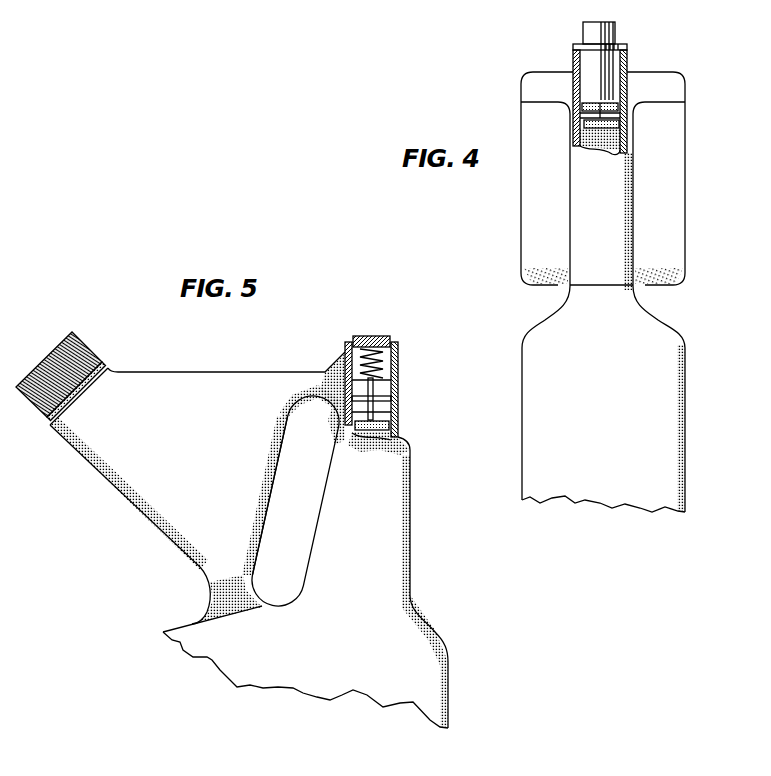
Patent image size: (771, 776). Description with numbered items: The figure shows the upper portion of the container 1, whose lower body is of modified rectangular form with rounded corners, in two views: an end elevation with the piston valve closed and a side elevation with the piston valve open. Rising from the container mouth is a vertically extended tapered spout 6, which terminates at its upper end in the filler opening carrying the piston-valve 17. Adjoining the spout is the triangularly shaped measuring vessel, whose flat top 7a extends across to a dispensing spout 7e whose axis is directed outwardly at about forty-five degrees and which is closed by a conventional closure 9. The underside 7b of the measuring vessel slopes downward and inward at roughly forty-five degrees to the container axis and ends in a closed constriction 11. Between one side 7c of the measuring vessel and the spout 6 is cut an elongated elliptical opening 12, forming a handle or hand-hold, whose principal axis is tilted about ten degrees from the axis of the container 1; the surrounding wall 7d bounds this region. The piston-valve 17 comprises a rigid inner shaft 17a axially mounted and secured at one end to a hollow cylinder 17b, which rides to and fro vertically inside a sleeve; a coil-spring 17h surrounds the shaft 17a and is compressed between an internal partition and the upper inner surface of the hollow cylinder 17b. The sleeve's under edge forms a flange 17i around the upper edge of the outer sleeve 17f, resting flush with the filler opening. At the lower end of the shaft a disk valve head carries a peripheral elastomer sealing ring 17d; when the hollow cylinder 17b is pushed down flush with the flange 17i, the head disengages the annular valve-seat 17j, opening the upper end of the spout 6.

In FIG. 4, the container 1 is at (603, 485).
In FIG. 5, the container 1 is at (286, 676).
In FIG. 4, the tapered spout 6 is at (587, 245).
In FIG. 5, the tapered spout 6 is at (387, 545).
In FIG. 5, the flat top 7a is at (207, 372).
In FIG. 5, the underside 7b is at (97, 473).
In FIG. 5, the side of measuring vessel 7c is at (272, 477).
In FIG. 4, the handle block 7d is at (540, 210).
In FIG. 5, the dispensing spout 7e is at (105, 368).
In FIG. 5, the closure 9 is at (50, 362).
In FIG. 5, the closed constriction 11 is at (215, 595).
In FIG. 5, the elongated elliptical opening 12 is at (282, 543).
In FIG. 4, the piston-valve 17 is at (623, 79).
In FIG. 5, the piston-valve 17 is at (372, 369).
In FIG. 4, the inner shaft 17a is at (604, 103).
In FIG. 5, the inner shaft 17a is at (395, 415).
In FIG. 4, the hollow cylinder 17b is at (583, 32).
In FIG. 5, the hollow cylinder 17b is at (358, 338).
In FIG. 4, the peripheral elastomer sealing ring 17d is at (627, 115).
In FIG. 5, the peripheral elastomer sealing ring 17d is at (393, 432).
In FIG. 4, the outer sleeve 17f is at (590, 63).
In FIG. 5, the outer sleeve 17f is at (397, 343).
In FIG. 5, the coil-spring 17h is at (375, 343).
In FIG. 4, the flange 17i is at (628, 50).
In FIG. 5, the flange 17i is at (348, 352).
In FIG. 5, the annular valve-seat 17j is at (382, 400).